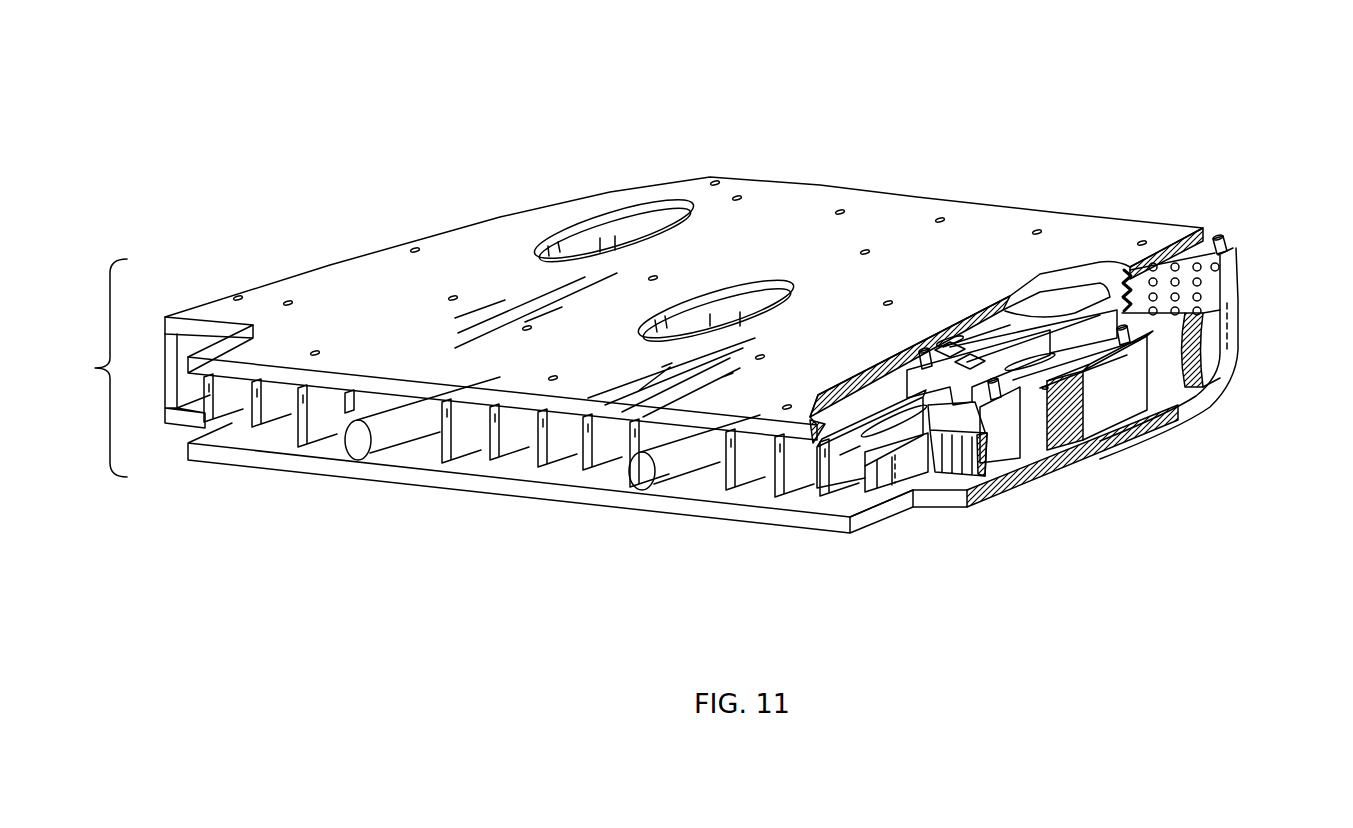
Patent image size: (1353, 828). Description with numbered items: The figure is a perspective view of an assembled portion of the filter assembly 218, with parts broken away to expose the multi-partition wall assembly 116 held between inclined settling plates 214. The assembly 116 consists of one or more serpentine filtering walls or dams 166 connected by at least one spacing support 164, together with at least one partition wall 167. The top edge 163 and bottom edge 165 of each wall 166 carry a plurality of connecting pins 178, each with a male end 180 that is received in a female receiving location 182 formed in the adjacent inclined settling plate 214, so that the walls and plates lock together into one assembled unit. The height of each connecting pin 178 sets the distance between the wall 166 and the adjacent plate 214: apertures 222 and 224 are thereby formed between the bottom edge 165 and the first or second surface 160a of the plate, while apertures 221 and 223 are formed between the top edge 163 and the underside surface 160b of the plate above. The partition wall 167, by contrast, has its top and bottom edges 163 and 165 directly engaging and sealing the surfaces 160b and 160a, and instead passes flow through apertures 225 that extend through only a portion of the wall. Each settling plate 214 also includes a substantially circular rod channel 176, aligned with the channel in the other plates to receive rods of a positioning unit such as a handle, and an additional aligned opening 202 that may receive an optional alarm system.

The multi-partition wall assembly 116 is at (326, 459).
The first or second surface 160a is at (1170, 392).
The underside surface 160b is at (193, 349).
The top edge 163 is at (843, 437).
The spacing support 164 is at (382, 440).
The bottom edge 165 is at (840, 488).
The filtering wall or dam 166 is at (1003, 450).
The partition wall 167 is at (1223, 313).
The rod channel 176 is at (761, 293).
The connecting pin 178 is at (905, 343).
The male end 180 is at (924, 349).
The female receiving location 182 is at (737, 196).
The opening 202 is at (1108, 262).
The inclined settling plate 214 is at (324, 268).
The filter assembly 218 is at (92, 368).
The aperture 221 is at (775, 450).
The aperture 222 is at (790, 507).
The aperture 223 is at (892, 445).
The aperture 224 is at (1080, 449).
The aperture 225 is at (1163, 243).